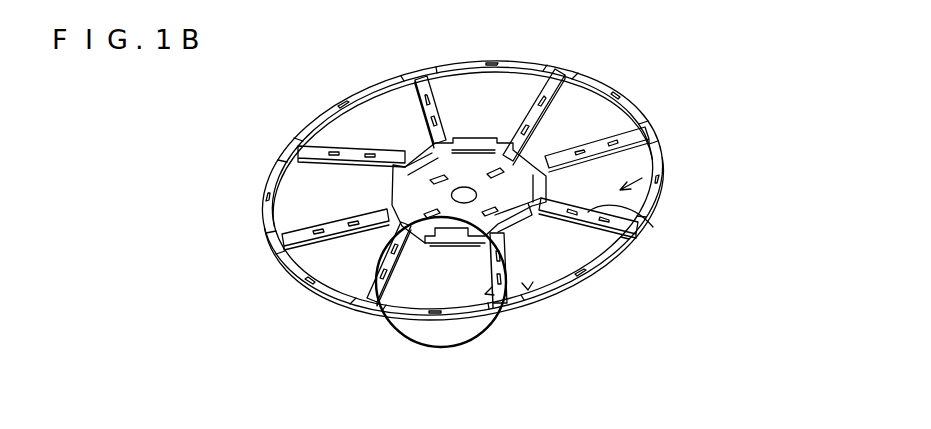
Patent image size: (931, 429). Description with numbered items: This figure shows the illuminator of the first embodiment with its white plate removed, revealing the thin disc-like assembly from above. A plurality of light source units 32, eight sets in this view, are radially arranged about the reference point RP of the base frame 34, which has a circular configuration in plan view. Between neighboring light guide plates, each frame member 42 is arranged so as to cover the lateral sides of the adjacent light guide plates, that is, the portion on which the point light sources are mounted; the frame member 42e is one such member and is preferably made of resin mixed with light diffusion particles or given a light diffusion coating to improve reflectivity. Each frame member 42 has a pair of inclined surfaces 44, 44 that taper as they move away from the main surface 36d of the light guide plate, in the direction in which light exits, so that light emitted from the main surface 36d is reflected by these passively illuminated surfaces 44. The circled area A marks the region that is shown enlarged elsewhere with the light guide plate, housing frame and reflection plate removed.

The light source unit 32 is at (660, 150).
The base frame 34 is at (490, 194).
The main surface 36d is at (660, 183).
The frame member 42 is at (642, 145).
The frame member 42e is at (650, 222).
The inclined surface 44 is at (528, 290).
The reference point RP is at (462, 193).
The area A is at (402, 335).